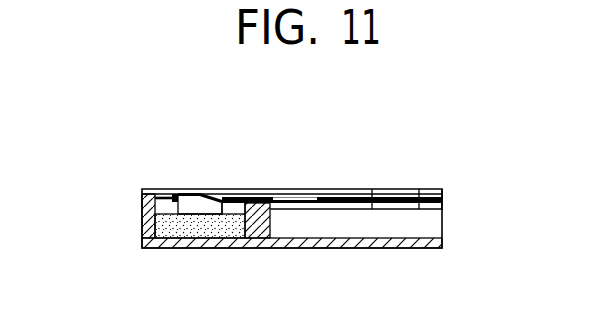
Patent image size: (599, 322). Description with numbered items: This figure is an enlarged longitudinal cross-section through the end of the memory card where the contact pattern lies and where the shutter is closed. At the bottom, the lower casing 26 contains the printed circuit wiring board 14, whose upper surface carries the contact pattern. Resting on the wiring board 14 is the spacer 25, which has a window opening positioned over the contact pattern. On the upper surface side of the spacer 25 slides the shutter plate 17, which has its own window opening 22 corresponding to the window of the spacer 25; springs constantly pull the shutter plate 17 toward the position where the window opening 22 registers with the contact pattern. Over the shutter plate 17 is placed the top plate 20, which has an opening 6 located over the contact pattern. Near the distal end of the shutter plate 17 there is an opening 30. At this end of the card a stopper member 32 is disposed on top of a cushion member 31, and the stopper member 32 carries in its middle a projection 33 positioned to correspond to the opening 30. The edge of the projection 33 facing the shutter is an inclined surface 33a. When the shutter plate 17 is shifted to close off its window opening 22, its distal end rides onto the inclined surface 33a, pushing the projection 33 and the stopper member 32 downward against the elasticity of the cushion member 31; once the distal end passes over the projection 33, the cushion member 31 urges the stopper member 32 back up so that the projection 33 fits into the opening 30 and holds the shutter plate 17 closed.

The opening 6 is at (382, 192).
The printed circuit wiring board 14 is at (430, 214).
The shutter plate 17 is at (442, 200).
The top plate 20 is at (430, 193).
The window opening 22 is at (292, 199).
The spacer 25 is at (408, 210).
The lower casing 26 is at (407, 244).
The opening 30 is at (223, 197).
The cushion member 31 is at (205, 226).
The stopper member 32 is at (163, 212).
The projection 33 is at (185, 200).
The inclined surface 33a is at (206, 192).